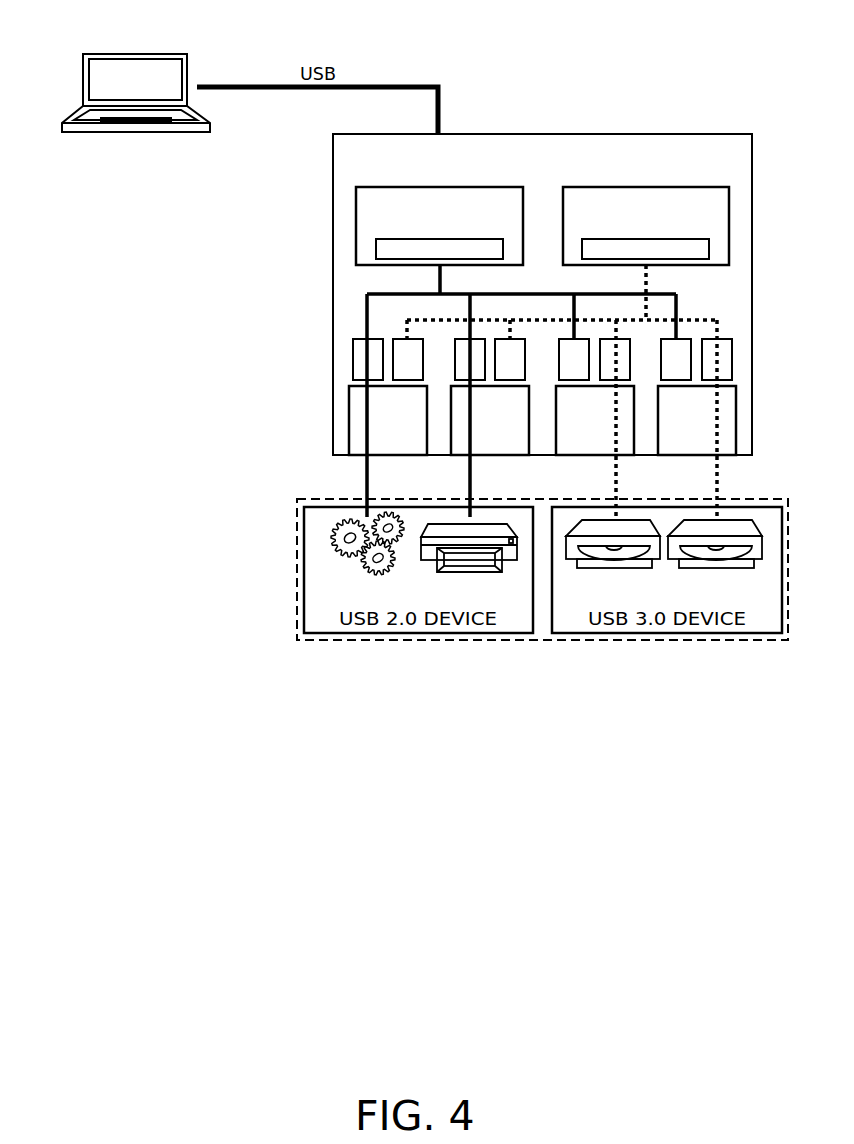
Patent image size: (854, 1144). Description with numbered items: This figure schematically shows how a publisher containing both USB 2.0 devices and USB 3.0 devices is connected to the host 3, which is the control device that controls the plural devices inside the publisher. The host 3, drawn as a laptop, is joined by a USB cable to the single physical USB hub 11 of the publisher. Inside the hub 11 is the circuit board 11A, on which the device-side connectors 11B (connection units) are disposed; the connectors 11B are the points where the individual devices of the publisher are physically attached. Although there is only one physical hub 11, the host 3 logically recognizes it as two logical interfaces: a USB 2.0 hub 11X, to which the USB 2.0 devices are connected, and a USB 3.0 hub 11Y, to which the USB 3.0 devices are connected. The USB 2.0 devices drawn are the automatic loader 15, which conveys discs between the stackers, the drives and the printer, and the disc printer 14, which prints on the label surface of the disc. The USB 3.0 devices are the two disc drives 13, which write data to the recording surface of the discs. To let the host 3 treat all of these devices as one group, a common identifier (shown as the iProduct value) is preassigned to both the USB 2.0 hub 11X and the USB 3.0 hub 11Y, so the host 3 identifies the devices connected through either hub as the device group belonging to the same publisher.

The host 3 is at (132, 53).
The USB hub 11 is at (550, 131).
The circuit board 11A is at (646, 133).
The USB 2.0 hub 11X is at (425, 187).
The USB 3.0 hub 11Y is at (671, 187).
The device-side connector 11B is at (403, 456).
The disc drive 13 is at (632, 520).
The disc printer 14 is at (440, 525).
The automatic loader 15 is at (345, 525).